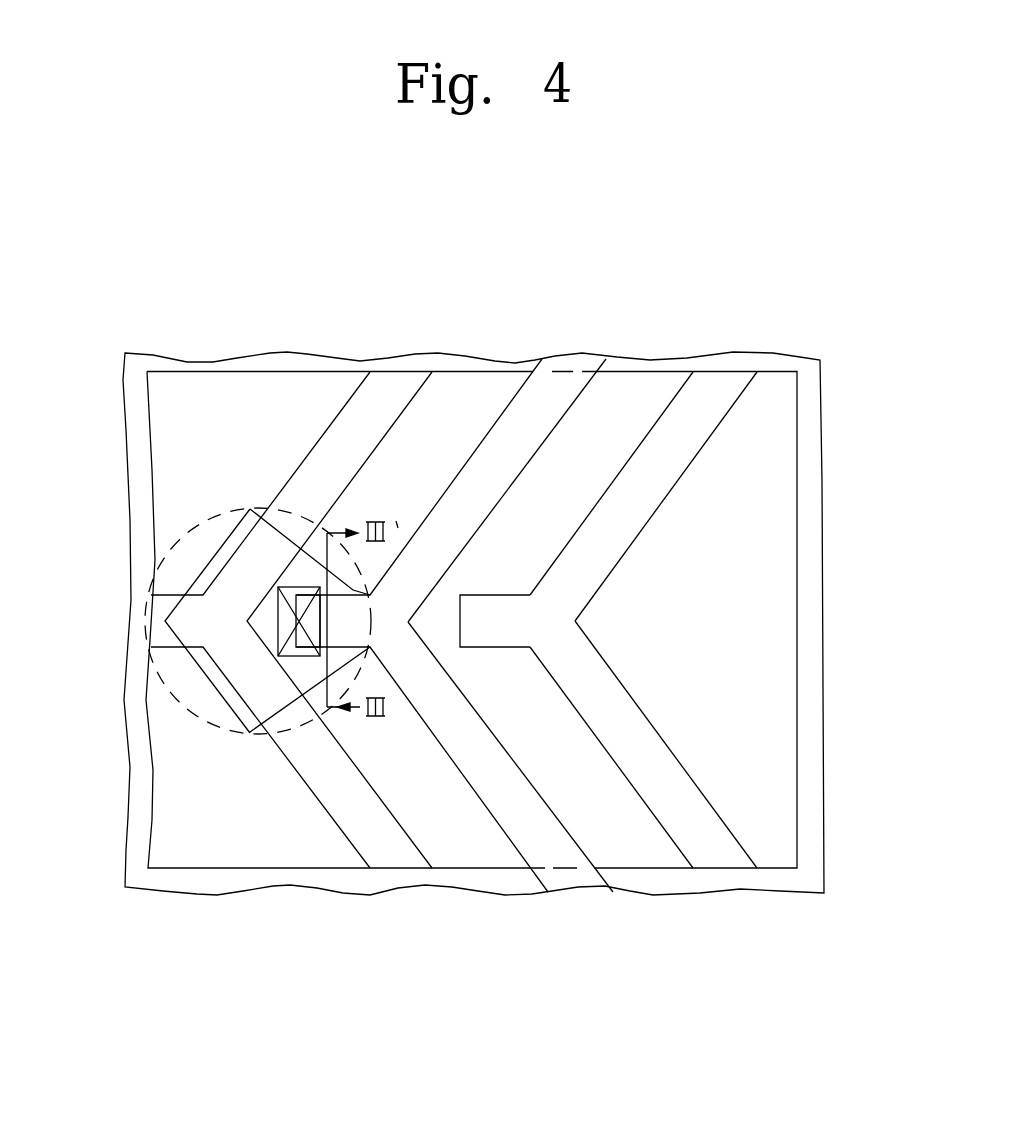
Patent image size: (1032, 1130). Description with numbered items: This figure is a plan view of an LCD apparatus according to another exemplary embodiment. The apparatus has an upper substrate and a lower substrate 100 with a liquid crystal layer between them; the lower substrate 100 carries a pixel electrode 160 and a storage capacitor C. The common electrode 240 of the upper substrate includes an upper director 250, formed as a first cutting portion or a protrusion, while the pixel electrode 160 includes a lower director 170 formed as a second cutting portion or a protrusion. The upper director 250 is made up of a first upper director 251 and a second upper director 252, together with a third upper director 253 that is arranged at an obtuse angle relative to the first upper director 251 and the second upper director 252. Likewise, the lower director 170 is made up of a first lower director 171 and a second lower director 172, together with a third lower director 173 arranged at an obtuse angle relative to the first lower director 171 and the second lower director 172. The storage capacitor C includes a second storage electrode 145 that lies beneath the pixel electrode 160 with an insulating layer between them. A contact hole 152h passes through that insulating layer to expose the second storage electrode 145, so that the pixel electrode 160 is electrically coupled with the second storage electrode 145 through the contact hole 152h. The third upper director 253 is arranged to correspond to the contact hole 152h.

The lower substrate 100 is at (800, 660).
The common electrode 240 is at (812, 833).
The pixel electrode 160 is at (770, 566).
The second storage electrode 145 is at (277, 587).
The contact hole 152h is at (302, 585).
The upper director 250 is at (475, 632).
The first upper director 251 is at (558, 418).
The second upper director 252 is at (552, 825).
The third upper director 253 is at (369, 648).
The lower director 170 is at (691, 568).
The first lower director 171 is at (683, 465).
The second lower director 172 is at (683, 776).
The third lower director 173 is at (490, 647).
The storage capacitor C is at (140, 622).